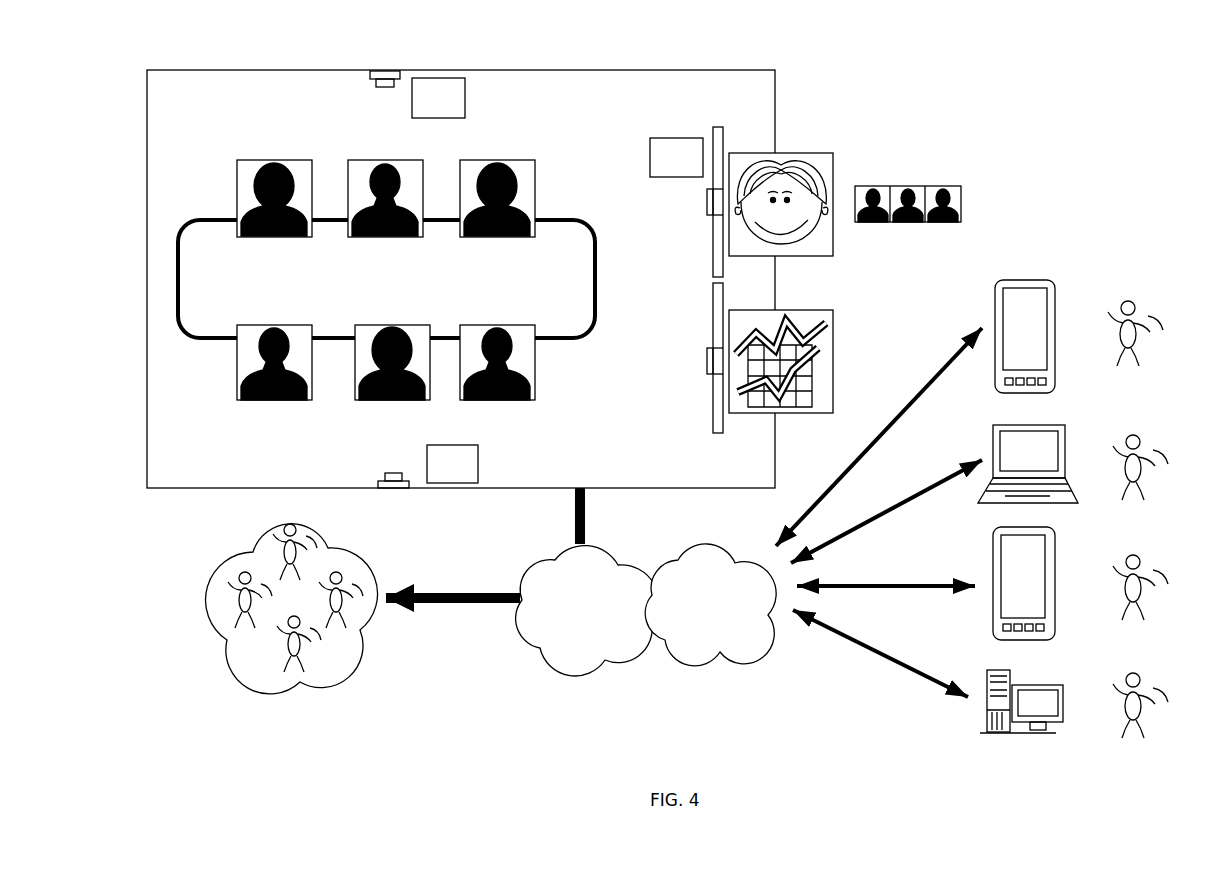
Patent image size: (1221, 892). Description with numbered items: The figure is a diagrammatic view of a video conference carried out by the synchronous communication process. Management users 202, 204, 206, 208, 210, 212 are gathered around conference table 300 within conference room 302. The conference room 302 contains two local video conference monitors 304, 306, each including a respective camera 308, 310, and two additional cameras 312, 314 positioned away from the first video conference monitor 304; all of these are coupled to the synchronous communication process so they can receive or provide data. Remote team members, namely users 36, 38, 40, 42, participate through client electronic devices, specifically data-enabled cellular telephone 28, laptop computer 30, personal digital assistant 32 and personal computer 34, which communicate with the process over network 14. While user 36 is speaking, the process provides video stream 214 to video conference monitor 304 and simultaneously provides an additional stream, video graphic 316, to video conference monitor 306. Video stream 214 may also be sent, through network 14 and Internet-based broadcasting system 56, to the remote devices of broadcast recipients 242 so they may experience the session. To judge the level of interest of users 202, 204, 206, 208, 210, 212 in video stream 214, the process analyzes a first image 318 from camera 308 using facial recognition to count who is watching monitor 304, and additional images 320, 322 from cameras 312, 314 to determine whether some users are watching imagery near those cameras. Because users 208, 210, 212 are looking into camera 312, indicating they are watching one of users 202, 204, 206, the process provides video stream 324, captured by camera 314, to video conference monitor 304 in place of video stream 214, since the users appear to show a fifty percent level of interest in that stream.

The conference room 302 is at (603, 76).
The conference table 300 is at (386, 279).
The user 202 is at (232, 158).
The user 204 is at (344, 158).
The user 206 is at (456, 158).
The user 208 is at (237, 401).
The user 210 is at (355, 401).
The user 212 is at (460, 401).
The camera 312 is at (378, 69).
The camera 314 is at (390, 489).
The image 320 is at (438, 98).
The image 322 is at (452, 464).
The image 318 is at (676, 157).
The video conference monitor 304 is at (718, 126).
The video conference monitor 306 is at (717, 434).
The camera 308 is at (706, 205).
The camera 310 is at (706, 362).
The video stream 214 is at (819, 244).
The video graphic 316 is at (818, 320).
The video stream 324 is at (962, 208).
The Internet-based broadcasting system 56 is at (588, 611).
The network 14 is at (710, 605).
The broadcast recipients 242 is at (285, 688).
The data-enabled cellular telephone 28 is at (1056, 298).
The laptop computer 30 is at (1068, 430).
The personal digital assistant 32 is at (1056, 590).
The personal computer 34 is at (1070, 698).
The user 36 is at (1142, 333).
The user 38 is at (1147, 467).
The user 40 is at (1147, 587).
The user 42 is at (1147, 705).